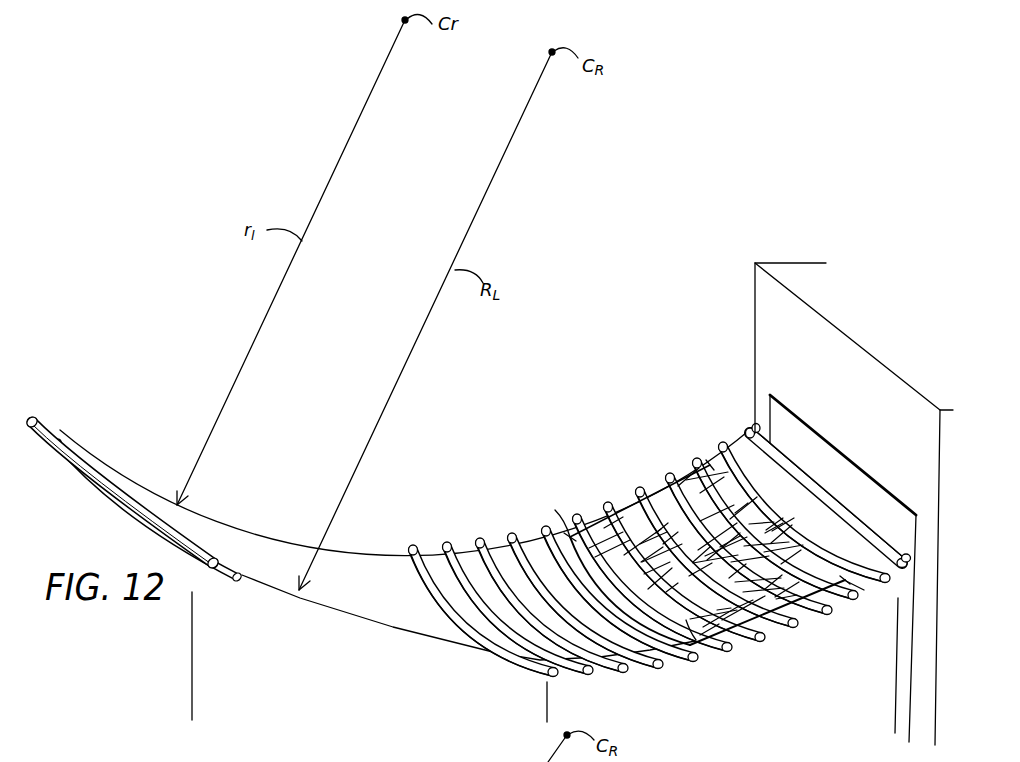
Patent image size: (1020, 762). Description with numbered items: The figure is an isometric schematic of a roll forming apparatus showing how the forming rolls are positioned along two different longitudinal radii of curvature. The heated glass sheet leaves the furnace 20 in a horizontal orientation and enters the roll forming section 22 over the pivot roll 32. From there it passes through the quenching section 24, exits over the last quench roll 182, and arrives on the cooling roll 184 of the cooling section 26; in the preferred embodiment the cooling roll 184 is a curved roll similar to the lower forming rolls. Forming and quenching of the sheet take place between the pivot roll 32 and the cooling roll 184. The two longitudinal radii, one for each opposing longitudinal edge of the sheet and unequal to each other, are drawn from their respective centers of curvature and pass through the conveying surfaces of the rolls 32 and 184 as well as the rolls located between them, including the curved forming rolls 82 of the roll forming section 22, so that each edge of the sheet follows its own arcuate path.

The glass sheet heating furnace 20 is at (857, 298).
The roll forming section 22 is at (896, 707).
The quenching section 24 is at (545, 714).
The cooling section 26 is at (134, 550).
The pivot roll 32 is at (748, 436).
The curved tubes 82 is at (423, 548).
The last quench roll 182 is at (80, 458).
The cooling roll 184 is at (48, 435).